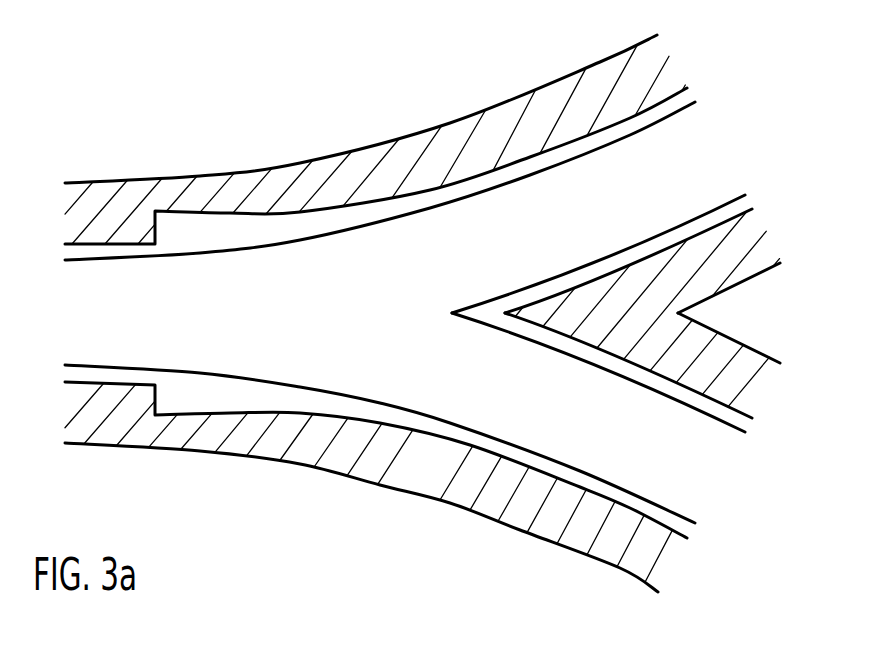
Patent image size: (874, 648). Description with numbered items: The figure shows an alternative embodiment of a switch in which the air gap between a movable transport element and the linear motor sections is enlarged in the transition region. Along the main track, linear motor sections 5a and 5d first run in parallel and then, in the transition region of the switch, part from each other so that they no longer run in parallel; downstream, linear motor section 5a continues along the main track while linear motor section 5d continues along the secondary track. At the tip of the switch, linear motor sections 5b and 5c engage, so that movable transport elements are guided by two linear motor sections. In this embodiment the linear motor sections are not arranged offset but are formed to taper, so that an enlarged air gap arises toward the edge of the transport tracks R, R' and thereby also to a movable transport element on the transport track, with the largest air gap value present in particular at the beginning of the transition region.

The linear motor section 5a is at (563, 85).
The linear motor section 5b is at (755, 275).
The linear motor section 5c is at (755, 351).
The linear motor section 5d is at (565, 542).
The transport track R is at (380, 200).
The transport track R' is at (380, 428).